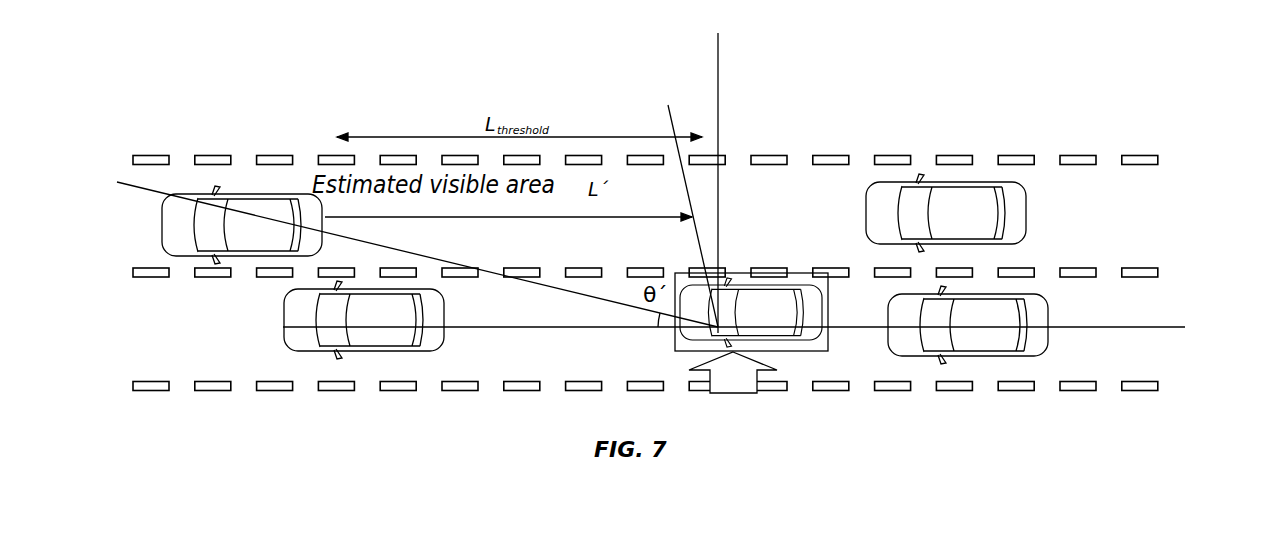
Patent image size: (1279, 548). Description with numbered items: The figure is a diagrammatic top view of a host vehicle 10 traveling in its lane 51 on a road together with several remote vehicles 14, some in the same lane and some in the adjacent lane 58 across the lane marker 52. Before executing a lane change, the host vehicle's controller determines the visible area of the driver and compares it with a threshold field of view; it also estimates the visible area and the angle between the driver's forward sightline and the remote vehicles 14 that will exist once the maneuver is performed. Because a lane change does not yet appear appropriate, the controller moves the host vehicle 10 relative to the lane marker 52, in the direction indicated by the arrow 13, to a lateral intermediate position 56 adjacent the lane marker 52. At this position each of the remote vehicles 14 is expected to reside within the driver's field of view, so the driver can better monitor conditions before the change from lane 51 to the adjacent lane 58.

The host vehicle 10 is at (763, 303).
The driving direction arrow 13 is at (733, 382).
The remote vehicles 14 is at (942, 320).
The lane 51 is at (1142, 355).
The lane marker 52 is at (1157, 272).
The lateral intermediate position 56 is at (798, 272).
The adjacent lane 58 is at (1142, 203).